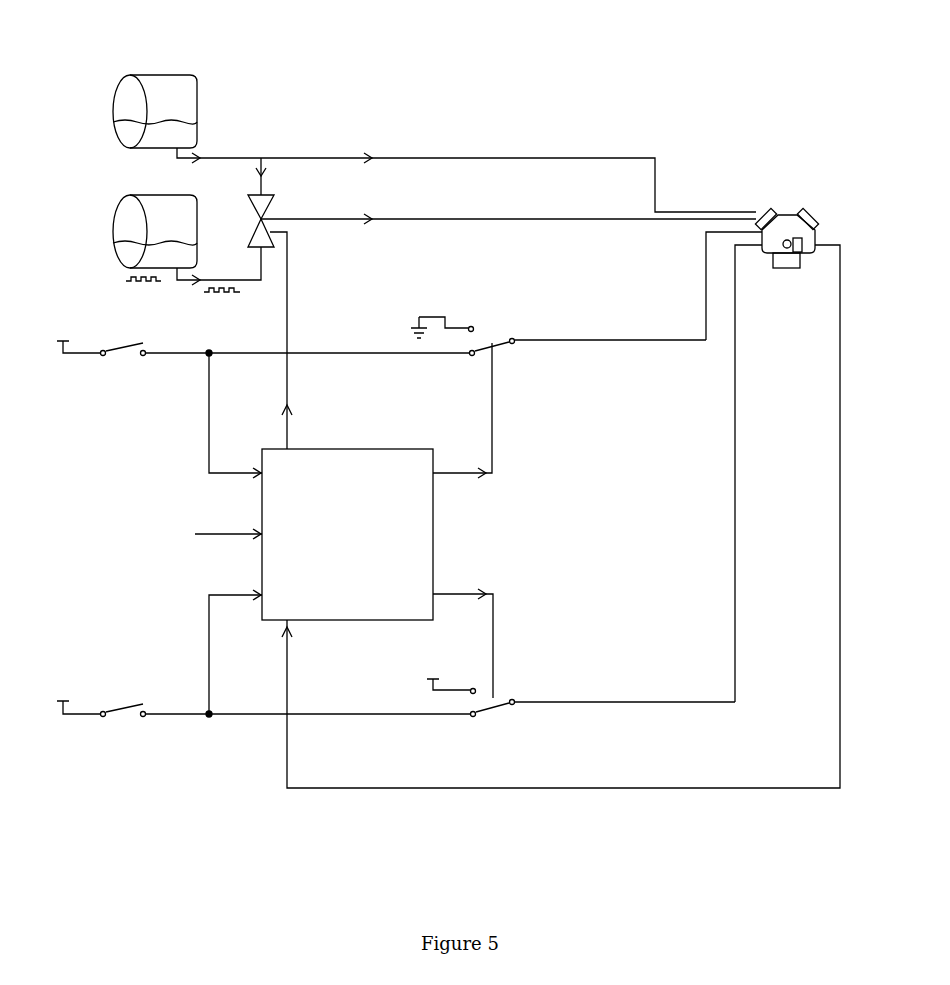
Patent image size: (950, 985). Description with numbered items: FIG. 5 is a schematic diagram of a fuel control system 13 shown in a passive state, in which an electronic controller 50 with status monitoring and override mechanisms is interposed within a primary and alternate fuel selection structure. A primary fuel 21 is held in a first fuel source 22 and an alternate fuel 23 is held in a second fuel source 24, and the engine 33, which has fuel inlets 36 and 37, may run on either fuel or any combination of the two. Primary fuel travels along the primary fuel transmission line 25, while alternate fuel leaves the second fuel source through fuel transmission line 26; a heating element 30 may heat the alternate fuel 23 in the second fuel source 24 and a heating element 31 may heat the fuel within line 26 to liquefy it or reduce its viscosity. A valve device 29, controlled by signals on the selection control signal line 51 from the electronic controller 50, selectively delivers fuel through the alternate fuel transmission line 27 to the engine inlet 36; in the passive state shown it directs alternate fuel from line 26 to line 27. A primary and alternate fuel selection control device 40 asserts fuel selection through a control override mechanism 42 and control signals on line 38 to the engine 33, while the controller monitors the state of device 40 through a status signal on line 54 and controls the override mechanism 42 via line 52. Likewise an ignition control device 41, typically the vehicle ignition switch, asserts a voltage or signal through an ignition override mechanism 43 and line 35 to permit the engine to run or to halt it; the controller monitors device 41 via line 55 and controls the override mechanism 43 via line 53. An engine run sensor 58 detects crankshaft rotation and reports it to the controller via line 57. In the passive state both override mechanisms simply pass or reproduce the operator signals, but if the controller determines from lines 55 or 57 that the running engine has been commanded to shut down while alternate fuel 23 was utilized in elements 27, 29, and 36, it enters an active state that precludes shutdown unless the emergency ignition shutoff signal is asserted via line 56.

The fuel control system 13 is at (458, 42).
The primary fuel 21 is at (118, 136).
The first fuel source 22 is at (112, 98).
The alternate fuel 23 is at (118, 250).
The second fuel source 24 is at (197, 210).
The primary fuel transmission line 25 is at (283, 156).
The fuel transmission line 26 is at (238, 277).
The alternate fuel transmission line 27 is at (327, 214).
The valve device 29 is at (250, 194).
The heating element 30 is at (145, 286).
The heating element 31 is at (223, 297).
The engine 33 is at (796, 226).
The line 35 is at (741, 319).
The fuel inlet 36 is at (761, 213).
The fuel inlet 37 is at (766, 208).
The line 38 is at (702, 247).
The primary fuel and alternate fuel selection control device 40 is at (121, 346).
The ignition control device 41 is at (122, 705).
The control override mechanism 42 is at (518, 348).
The ignition override mechanism 43 is at (513, 708).
The electronic controller 50 is at (345, 454).
The primary fuel and alternate fuel selection control signal line 51 is at (293, 376).
The line 52 is at (490, 417).
The line 53 is at (497, 636).
The line 54 is at (206, 443).
The line 55 is at (207, 642).
The line 56 is at (236, 539).
The line 57 is at (836, 331).
The engine run sensor 58 is at (803, 248).